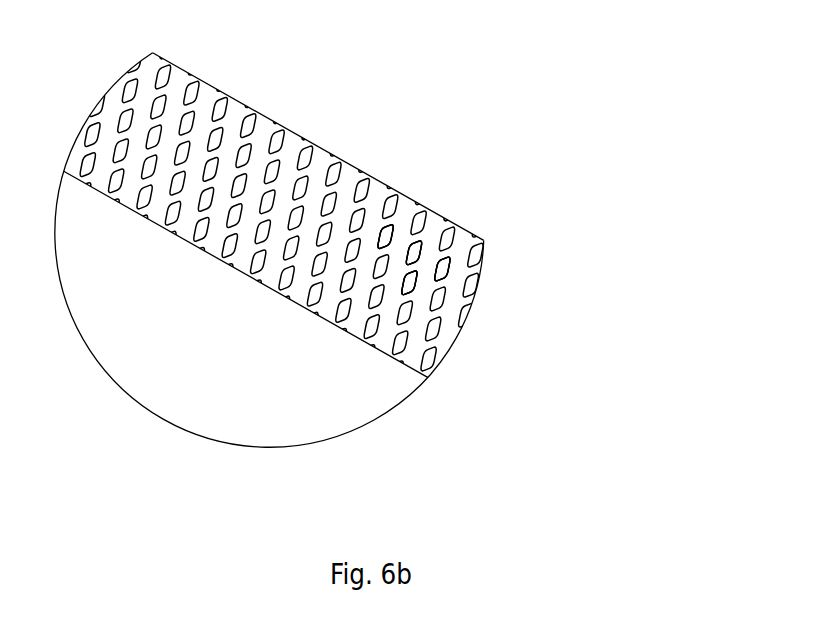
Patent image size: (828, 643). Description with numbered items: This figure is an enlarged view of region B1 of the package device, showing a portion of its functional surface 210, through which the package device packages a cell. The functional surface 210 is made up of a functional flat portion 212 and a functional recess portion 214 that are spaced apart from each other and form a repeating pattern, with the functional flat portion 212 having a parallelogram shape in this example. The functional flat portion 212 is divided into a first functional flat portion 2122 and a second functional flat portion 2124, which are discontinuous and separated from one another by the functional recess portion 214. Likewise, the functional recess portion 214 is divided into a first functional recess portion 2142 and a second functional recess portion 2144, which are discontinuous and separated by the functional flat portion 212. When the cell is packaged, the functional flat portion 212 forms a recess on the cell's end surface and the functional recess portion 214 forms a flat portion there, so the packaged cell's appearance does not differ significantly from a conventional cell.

The functional surface 210 is at (322, 317).
The functional flat portion 212 is at (598, 93).
The first functional flat portion 2122 is at (385, 232).
The second functional flat portion 2124 is at (410, 255).
The functional recess portion 214 is at (600, 365).
The first functional recess portion 2142 is at (395, 245).
The second functional recess portion 2144 is at (430, 258).
The enlarged region B1 is at (269, 284).